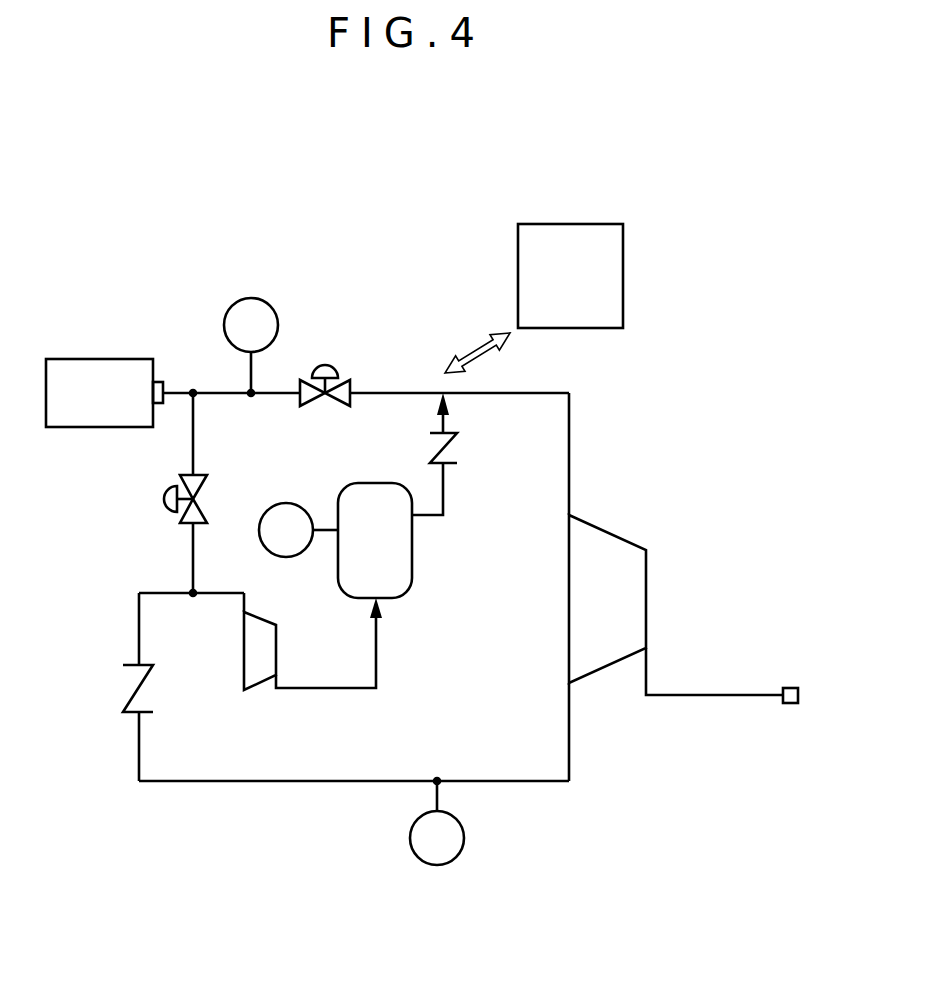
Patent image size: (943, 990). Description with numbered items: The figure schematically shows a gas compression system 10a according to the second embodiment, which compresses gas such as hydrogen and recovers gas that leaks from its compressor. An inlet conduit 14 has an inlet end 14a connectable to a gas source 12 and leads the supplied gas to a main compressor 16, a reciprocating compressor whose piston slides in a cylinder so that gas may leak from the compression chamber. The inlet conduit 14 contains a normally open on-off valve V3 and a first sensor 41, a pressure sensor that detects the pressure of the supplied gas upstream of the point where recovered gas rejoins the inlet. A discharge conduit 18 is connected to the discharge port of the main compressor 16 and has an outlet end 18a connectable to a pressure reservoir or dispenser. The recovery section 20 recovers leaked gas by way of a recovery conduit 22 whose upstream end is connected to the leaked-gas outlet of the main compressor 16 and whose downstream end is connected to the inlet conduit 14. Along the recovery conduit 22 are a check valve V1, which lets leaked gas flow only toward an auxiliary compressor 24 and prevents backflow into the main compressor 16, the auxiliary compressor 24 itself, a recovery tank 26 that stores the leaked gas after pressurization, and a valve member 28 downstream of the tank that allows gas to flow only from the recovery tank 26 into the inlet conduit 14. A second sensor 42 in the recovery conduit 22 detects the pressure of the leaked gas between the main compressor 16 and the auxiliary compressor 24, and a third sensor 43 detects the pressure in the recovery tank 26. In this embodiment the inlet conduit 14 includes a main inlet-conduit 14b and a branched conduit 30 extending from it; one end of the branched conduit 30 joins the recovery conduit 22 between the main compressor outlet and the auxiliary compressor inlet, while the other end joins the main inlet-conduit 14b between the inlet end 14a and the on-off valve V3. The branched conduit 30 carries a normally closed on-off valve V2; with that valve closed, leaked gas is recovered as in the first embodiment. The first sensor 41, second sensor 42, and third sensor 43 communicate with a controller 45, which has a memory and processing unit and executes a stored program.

The gas compression system 10a is at (150, 284).
The gas source 12 is at (105, 427).
The inlet conduit 14 is at (503, 393).
The inlet end 14a is at (158, 381).
The main inlet-conduit 14b is at (395, 393).
The main compressor 16 is at (610, 530).
The discharge conduit 18 is at (708, 690).
The outlet end 18a is at (787, 703).
The recovery section 20 is at (575, 812).
The recovery conduit 22 is at (278, 790).
The auxiliary compressor 24 is at (244, 657).
The recovery tank 26 is at (412, 567).
The valve member 28 is at (448, 465).
The branched conduit 30 is at (193, 458).
The first sensor 41 is at (260, 300).
The second sensor 42 is at (447, 863).
The third sensor 43 is at (280, 508).
The controller 45 is at (590, 224).
The valve member V1 is at (130, 712).
The on-off valve in the branched conduit V2 is at (185, 520).
The on-off valve in the inlet conduit V3 is at (348, 378).